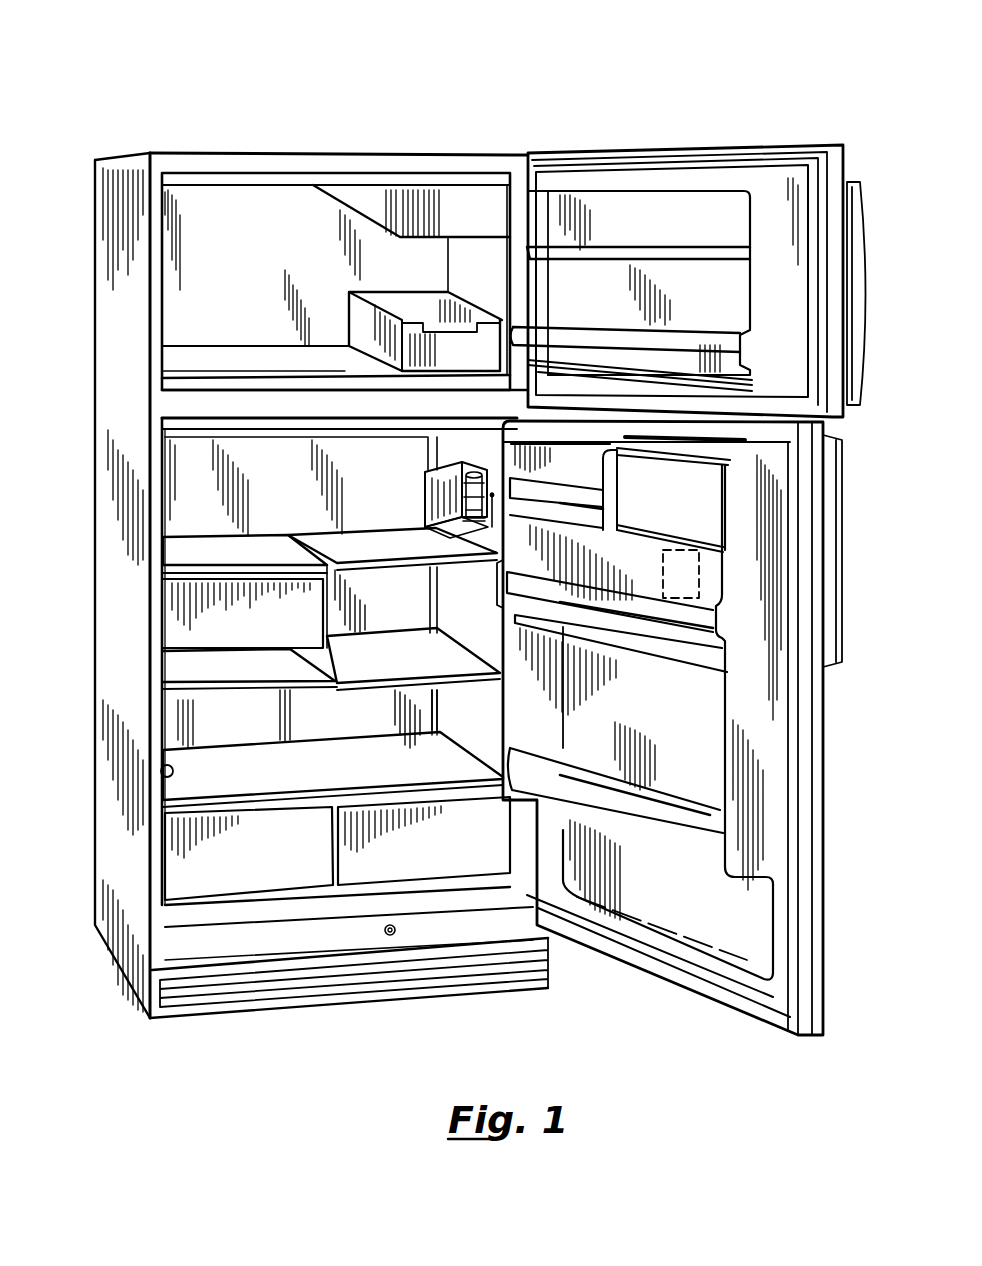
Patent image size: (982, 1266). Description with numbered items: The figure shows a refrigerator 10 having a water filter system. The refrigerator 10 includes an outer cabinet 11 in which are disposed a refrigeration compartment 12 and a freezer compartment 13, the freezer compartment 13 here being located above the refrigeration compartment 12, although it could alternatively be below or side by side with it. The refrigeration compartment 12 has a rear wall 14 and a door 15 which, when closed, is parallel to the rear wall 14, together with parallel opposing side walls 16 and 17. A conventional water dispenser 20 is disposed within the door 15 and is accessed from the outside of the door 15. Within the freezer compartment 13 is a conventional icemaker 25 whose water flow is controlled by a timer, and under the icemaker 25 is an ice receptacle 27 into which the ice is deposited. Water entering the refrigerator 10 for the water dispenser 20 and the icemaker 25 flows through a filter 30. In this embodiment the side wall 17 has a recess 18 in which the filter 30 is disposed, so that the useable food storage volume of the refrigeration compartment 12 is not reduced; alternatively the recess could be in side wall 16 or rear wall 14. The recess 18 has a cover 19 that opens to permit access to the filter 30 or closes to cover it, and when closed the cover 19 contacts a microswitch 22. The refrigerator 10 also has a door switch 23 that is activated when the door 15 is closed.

The refrigerator 10 is at (418, 138).
The outer cabinet 11 is at (310, 154).
The refrigeration compartment 12 is at (191, 502).
The freezer compartment 13 is at (263, 269).
The rear wall 14 is at (366, 721).
The door 15 is at (823, 787).
The side wall 16 is at (161, 773).
The side wall 17 is at (482, 721).
The recess 18 is at (465, 469).
The cover 19 is at (425, 494).
The water dispenser 20 is at (663, 560).
The microswitch 22 is at (490, 523).
The door switch 23 is at (385, 931).
The icemaker 25 is at (463, 217).
The ice receptacle 27 is at (463, 361).
The filter 30 is at (456, 502).